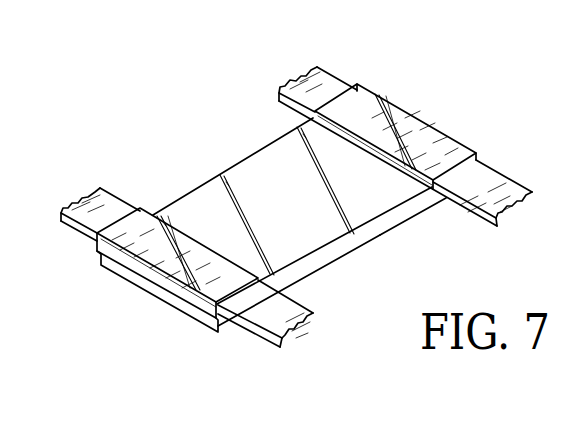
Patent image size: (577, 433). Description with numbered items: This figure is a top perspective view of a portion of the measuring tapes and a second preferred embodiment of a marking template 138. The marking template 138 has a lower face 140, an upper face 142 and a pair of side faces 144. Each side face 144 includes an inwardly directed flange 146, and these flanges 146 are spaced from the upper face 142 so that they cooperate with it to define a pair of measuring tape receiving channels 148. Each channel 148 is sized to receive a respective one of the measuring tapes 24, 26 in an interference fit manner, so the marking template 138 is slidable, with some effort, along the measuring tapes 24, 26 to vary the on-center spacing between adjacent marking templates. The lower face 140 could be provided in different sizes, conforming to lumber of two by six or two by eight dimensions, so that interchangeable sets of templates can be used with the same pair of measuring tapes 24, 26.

The measuring tape 24 is at (509, 160).
The measuring tape 26 is at (245, 337).
The marking template 138 is at (184, 148).
The lower face 140 is at (347, 259).
The upper face 142 is at (241, 183).
The side face 144 is at (215, 322).
The inwardly directed flange 146 is at (141, 236).
The measuring tape receiving channel 148 is at (421, 176).